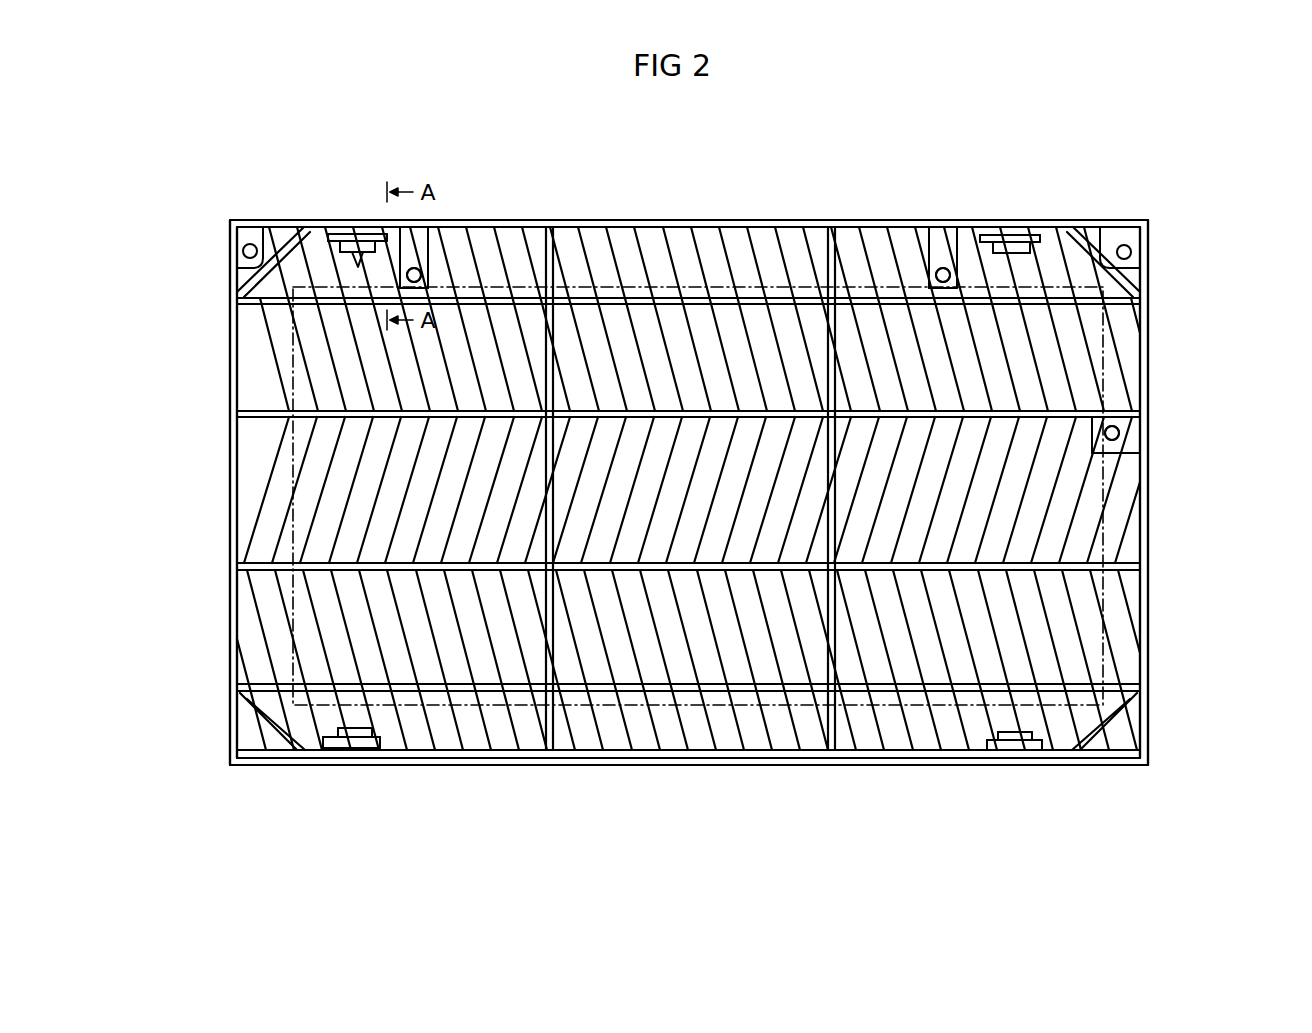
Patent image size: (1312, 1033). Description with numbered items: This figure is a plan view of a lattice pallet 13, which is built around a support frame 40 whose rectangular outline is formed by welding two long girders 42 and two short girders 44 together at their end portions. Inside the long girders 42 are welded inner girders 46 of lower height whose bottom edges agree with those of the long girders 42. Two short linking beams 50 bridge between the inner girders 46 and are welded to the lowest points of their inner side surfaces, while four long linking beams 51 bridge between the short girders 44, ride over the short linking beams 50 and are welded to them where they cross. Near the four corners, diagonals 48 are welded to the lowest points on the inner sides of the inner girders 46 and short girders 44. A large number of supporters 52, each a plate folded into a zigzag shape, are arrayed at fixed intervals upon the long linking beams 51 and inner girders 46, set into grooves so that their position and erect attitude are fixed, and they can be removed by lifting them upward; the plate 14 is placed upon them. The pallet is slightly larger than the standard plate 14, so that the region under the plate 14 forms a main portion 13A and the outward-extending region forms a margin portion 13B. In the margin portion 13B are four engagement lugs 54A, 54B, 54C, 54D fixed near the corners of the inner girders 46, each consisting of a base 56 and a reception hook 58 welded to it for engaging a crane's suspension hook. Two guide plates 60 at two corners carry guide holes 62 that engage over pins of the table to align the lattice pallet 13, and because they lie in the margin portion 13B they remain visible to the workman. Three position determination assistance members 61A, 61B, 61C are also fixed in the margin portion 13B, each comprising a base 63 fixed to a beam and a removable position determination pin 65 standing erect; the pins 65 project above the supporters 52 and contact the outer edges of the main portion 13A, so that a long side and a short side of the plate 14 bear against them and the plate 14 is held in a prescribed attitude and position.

The lattice pallet 13 is at (529, 121).
The main portion 13A is at (513, 340).
The margin portion 13B is at (490, 257).
The plate 14 is at (1107, 587).
The support frame 40 is at (683, 498).
The long girder 42 is at (622, 222).
The short girder 44 is at (233, 472).
The inner girder 46 is at (670, 243).
The diagonal 48 is at (262, 286).
The short linking beam 50 is at (549, 298).
The long linking beam 51 is at (262, 306).
The supporter 52 is at (257, 518).
The engagement lug 54A is at (317, 132).
The engagement lug 54B is at (1045, 132).
The engagement lug 54C is at (337, 862).
The engagement lug 54D is at (987, 862).
The base 56 is at (325, 262).
The reception hook 58 is at (358, 264).
The guide plate 60 is at (272, 236).
The position determination assistance member 61A is at (472, 132).
The position determination assistance member 61B is at (950, 132).
The position determination assistance member 61C is at (1232, 412).
The guide hole 62 is at (250, 243).
The base 63 is at (430, 262).
The position determination pin 65 is at (416, 266).